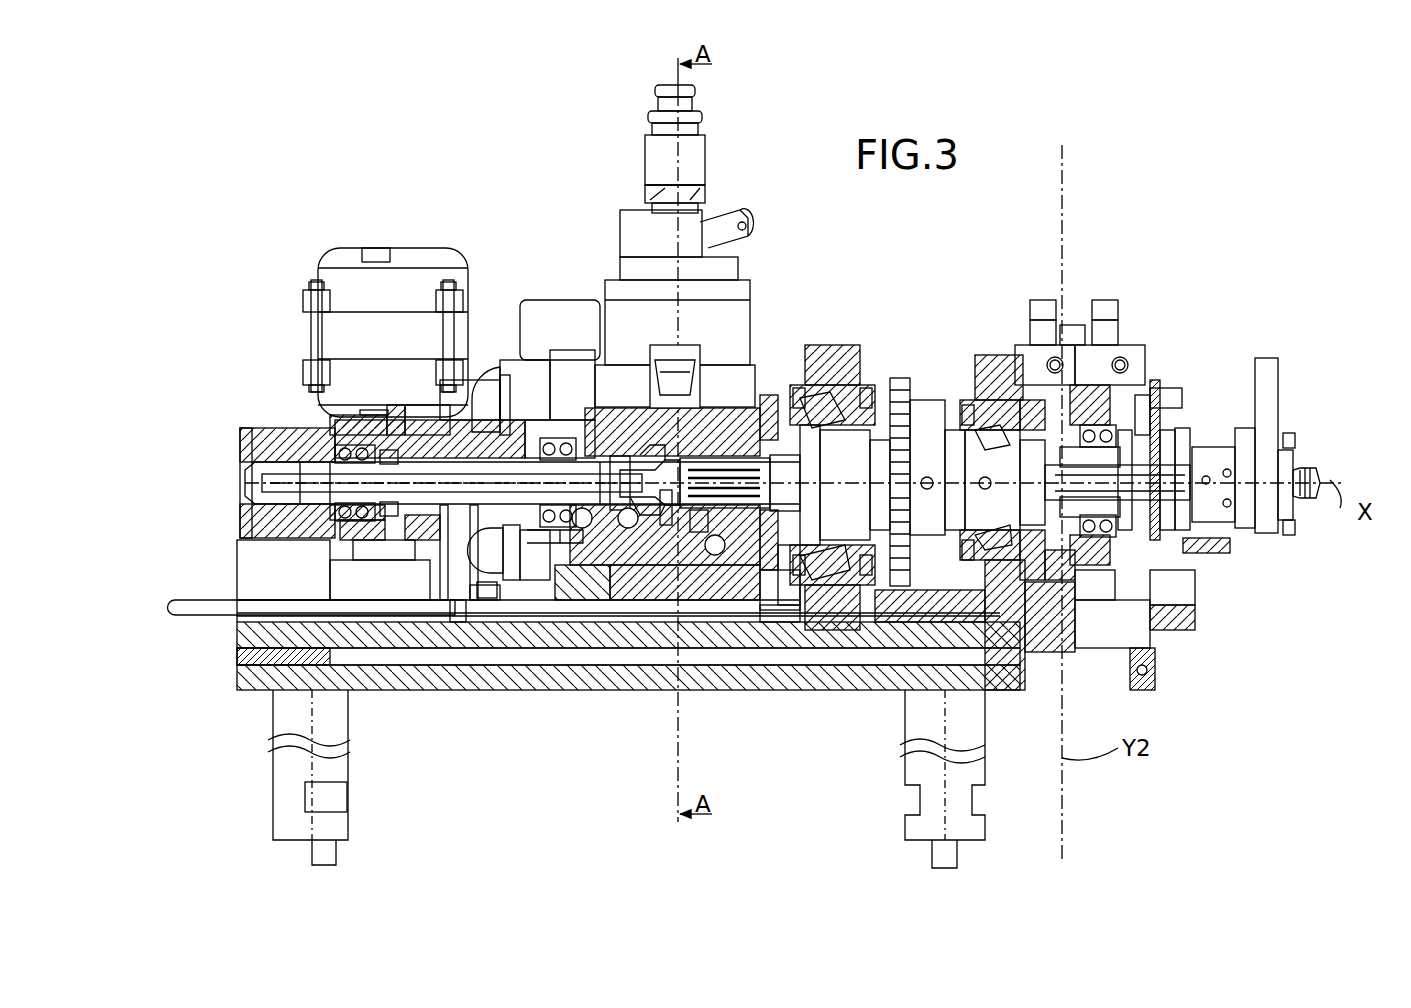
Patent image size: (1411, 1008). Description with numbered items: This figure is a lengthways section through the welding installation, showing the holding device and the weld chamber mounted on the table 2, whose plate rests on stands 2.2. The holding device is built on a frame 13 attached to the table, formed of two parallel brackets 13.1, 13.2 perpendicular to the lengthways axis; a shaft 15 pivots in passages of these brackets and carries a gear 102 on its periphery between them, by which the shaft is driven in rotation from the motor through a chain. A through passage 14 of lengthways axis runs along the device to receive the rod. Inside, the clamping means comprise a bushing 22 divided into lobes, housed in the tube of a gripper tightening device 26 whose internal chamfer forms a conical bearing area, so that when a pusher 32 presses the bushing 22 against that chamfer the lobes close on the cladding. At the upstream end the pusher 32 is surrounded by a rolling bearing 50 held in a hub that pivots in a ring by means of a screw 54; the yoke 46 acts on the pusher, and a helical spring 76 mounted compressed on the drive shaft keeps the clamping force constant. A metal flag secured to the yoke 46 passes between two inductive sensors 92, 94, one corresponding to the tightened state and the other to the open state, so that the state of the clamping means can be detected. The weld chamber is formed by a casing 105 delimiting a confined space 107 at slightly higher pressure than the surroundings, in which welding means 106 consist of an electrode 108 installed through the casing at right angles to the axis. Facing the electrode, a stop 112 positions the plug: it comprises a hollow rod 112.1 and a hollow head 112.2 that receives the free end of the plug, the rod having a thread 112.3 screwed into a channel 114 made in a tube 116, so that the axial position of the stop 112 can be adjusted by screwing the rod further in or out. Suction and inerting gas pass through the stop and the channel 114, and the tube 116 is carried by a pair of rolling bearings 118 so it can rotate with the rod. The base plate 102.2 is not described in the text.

The table 2 is at (228, 662).
The stands 2.2 is at (282, 770).
The frame 13 is at (988, 605).
The bracket 13.1 is at (996, 372).
The bracket 13.2 is at (830, 372).
The through passage 14 is at (1172, 520).
The shaft 15 is at (923, 548).
The bushing 22 is at (738, 505).
The gripper tightening device 26 is at (700, 465).
The pusher 32 is at (1078, 505).
The yoke 46 is at (1100, 450).
The rolling bearing 50 is at (1100, 478).
The screw 54 is at (1090, 430).
The helical spring 76 is at (1180, 478).
The inductive sensor 92 is at (1035, 365).
The inductive sensor 94 is at (1100, 362).
The gear 102 is at (897, 382).
The base plate 102.2 is at (812, 688).
The casing 105 is at (545, 590).
The welding means 106 is at (620, 172).
The confined space 107 is at (702, 525).
The electrode 108 is at (625, 440).
The stop 112 is at (660, 485).
The hollow rod 112.1 is at (640, 505).
The hollow head 112.2 is at (650, 492).
The thread 112.3 is at (627, 468).
The channel 114 is at (470, 482).
The tube 116 is at (445, 492).
The rolling bearings 118 is at (560, 440).